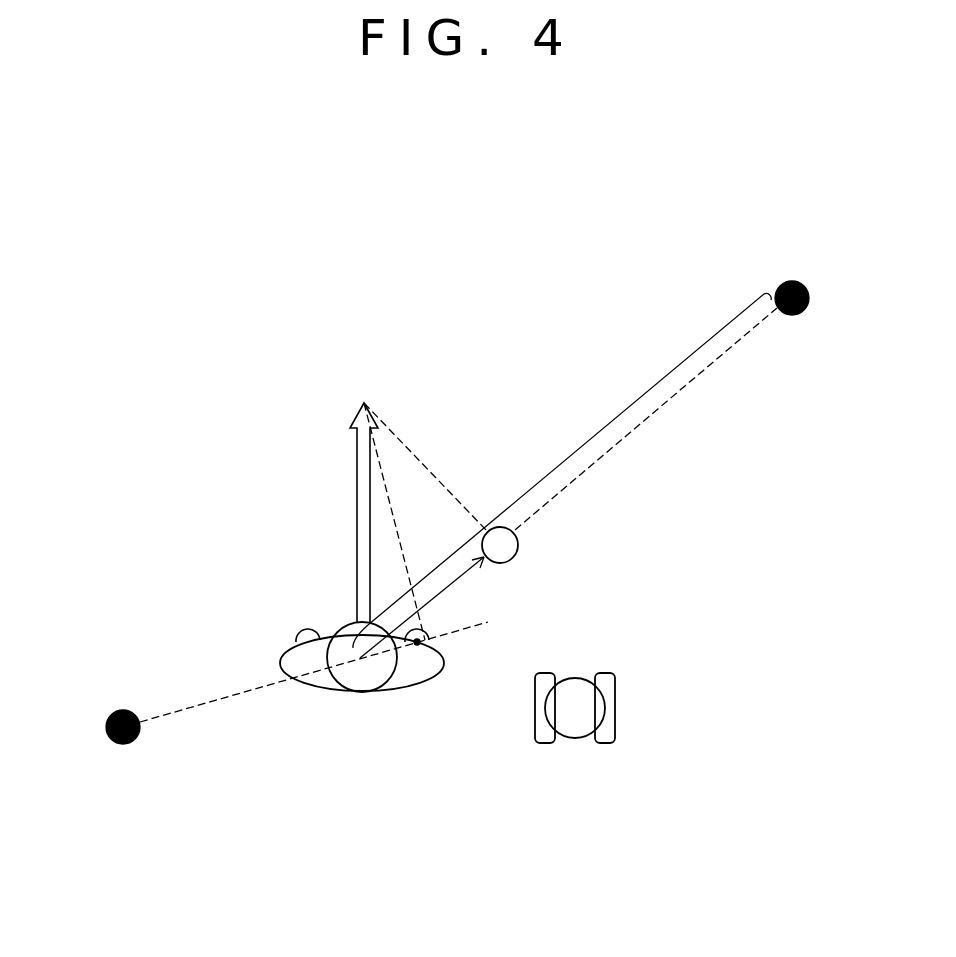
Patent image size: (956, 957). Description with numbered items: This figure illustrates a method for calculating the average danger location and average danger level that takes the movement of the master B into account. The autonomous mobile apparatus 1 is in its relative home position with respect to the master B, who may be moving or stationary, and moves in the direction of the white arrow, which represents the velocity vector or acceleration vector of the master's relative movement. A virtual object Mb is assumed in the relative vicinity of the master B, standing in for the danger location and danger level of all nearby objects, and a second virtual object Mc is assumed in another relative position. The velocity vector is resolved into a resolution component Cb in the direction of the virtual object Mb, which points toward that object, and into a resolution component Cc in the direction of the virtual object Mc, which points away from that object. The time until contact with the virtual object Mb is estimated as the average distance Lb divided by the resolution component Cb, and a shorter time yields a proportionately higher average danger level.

The autonomous mobile apparatus 1 is at (617, 703).
The master B is at (413, 672).
The average distance Lb is at (557, 468).
The virtual object Mb is at (785, 283).
The virtual object Mc is at (125, 745).
The resolution component Cb is at (458, 584).
The resolution component Cc is at (417, 644).